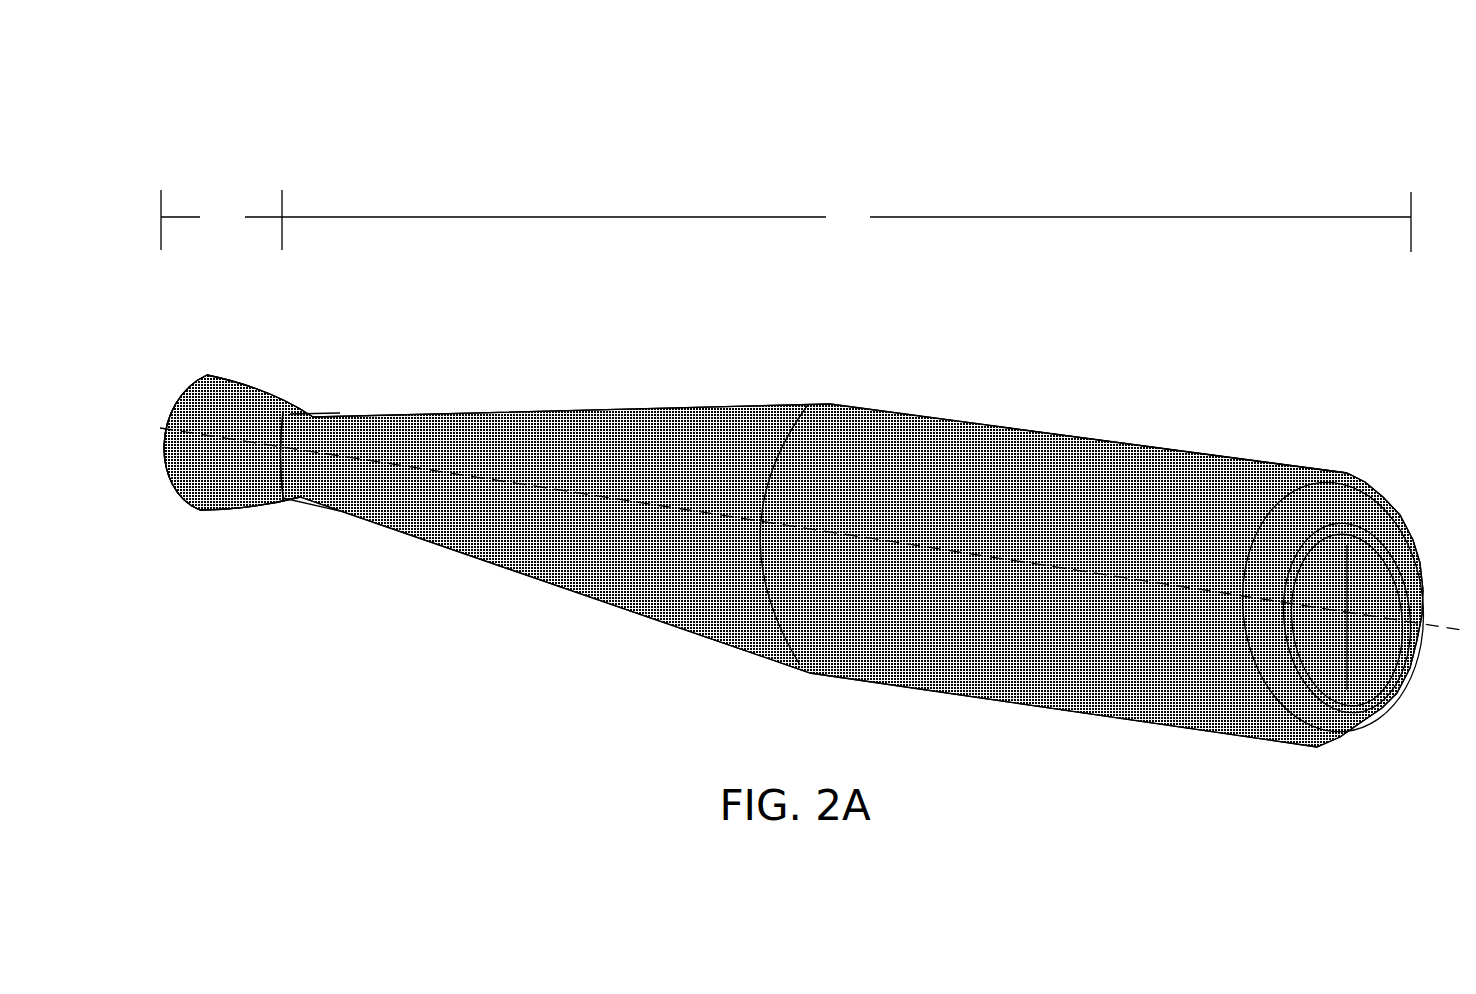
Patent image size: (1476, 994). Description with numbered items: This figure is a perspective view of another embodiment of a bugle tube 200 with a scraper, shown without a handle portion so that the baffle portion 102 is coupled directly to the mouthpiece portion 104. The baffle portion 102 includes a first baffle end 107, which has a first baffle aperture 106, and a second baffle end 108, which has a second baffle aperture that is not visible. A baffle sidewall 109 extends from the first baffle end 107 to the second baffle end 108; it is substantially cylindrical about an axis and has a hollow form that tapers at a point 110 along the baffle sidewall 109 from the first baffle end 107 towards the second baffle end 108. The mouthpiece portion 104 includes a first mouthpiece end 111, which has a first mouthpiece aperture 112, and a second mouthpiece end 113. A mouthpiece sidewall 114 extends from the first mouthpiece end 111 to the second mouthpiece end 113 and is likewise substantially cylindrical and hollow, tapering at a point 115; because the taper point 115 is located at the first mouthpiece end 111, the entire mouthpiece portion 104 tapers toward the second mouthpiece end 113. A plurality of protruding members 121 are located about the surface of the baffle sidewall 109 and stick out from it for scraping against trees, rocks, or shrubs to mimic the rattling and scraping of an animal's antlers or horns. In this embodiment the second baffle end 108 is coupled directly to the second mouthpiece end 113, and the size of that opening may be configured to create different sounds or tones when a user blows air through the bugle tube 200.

The bugle tube 200 is at (186, 114).
The baffle portion 102 is at (846, 222).
The mouthpiece portion 104 is at (221, 220).
The first baffle aperture 106 is at (1357, 663).
The first baffle end 107 is at (1324, 771).
The second baffle end 108 is at (291, 517).
The baffle sidewall 109 is at (740, 668).
The taper point of baffle sidewall 110 is at (830, 405).
The first mouthpiece end 111 is at (207, 368).
The first mouthpiece aperture 112 is at (146, 412).
The second mouthpiece end 113 is at (316, 398).
The mouthpiece sidewall 114 is at (234, 528).
The taper point of mouthpiece sidewall 115 is at (185, 392).
The protruding members 121 is at (1222, 458).